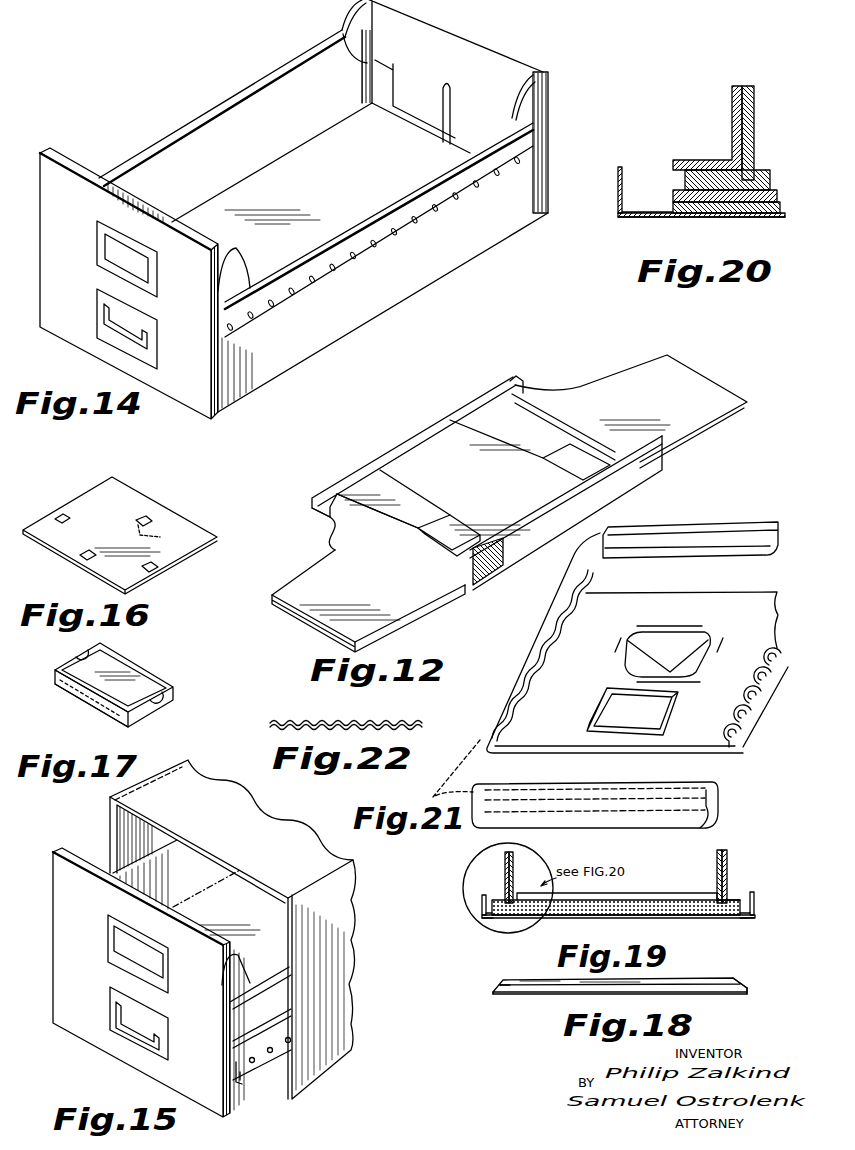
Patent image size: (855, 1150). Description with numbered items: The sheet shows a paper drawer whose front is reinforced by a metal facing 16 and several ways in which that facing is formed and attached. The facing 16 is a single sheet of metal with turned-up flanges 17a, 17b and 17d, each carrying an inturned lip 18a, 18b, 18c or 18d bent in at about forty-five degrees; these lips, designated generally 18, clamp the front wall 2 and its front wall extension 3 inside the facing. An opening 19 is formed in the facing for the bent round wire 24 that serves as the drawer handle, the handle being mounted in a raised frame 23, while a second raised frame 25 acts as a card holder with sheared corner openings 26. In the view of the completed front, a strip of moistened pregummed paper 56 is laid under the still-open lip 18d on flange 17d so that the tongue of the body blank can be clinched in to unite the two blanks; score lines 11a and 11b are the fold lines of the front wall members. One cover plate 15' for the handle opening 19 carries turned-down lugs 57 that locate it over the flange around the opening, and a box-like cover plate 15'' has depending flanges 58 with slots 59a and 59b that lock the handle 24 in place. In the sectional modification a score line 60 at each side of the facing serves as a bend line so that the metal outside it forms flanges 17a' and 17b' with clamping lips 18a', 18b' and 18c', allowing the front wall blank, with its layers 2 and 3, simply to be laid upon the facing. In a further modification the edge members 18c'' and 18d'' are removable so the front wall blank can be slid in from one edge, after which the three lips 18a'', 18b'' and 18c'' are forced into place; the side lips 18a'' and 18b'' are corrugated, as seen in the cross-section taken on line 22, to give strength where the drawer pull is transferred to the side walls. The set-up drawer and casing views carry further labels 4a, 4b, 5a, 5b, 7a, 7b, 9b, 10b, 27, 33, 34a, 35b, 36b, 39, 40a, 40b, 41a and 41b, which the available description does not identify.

In FIG. 20, the front wall 2 is at (773, 200).
In FIG. 19, the front wall 2 is at (660, 917).
In FIG. 20, the front wall extension 3 is at (762, 176).
In FIG. 12, the front wall extension 3 is at (556, 493).
In FIG. 19, the front wall extension 3 is at (685, 917).
In FIG. 14, the side flap 4a is at (236, 270).
In FIG. 20, the side flap 4a is at (735, 86).
In FIG. 12, the side flap 4a is at (320, 630).
In FIG. 19, the side flap 4a is at (505, 869).
In FIG. 15, the side flap 4a is at (245, 966).
In FIG. 19, the side flap 4b is at (728, 862).
In FIG. 20, the side wall panel 5a is at (753, 90).
In FIG. 12, the side wall panel 5a is at (368, 568).
In FIG. 19, the side wall panel 5a is at (514, 871).
In FIG. 12, the side wall panel 5b is at (631, 411).
In FIG. 19, the side wall panel 5b is at (717, 861).
In FIG. 12, the end box section 7a is at (449, 535).
In FIG. 12, the end box section 7b is at (576, 462).
In FIG. 12, the fold line 9b is at (549, 414).
In FIG. 12, the fold line 10b is at (538, 413).
In FIG. 12, the score line 11a is at (406, 484).
In FIG. 12, the score line 11b is at (492, 436).
In FIG. 16, the cover plate 15' is at (120, 535).
In FIG. 17, the box member cover plate 15'' is at (128, 685).
In FIG. 18, the metal facing 16 is at (518, 997).
In FIG. 20, the flange 17a is at (701, 230).
In FIG. 12, the flange 17a is at (301, 519).
In FIG. 18, the flange 17a is at (470, 993).
In FIG. 19, the flange 17a' is at (461, 931).
In FIG. 18, the flange 17b is at (764, 988).
In FIG. 19, the flange 17b' is at (764, 916).
In FIG. 12, the flange 17d is at (652, 474).
In FIG. 12, the corner tab 18 is at (522, 381).
In FIG. 20, the lip 18a is at (639, 178).
In FIG. 12, the lip 18a is at (319, 533).
In FIG. 18, the lip 18a is at (490, 975).
In FIG. 19, the lip 18a' is at (458, 909).
In FIG. 21, the corrugated side lip 18a'' is at (545, 655).
In FIG. 18, the lip 18b is at (757, 971).
In FIG. 19, the lip 18b' is at (772, 898).
In FIG. 22, the corrugated side lip 18b'' is at (370, 711).
In FIG. 21, the corrugated side lip 18b'' is at (756, 697).
In FIG. 12, the lip 18c is at (414, 443).
In FIG. 19, the lip 18c' is at (752, 881).
In FIG. 21, the removable edge member 18c'' is at (690, 551).
In FIG. 12, the lip 18d is at (496, 569).
In FIG. 21, the removable edge member 18d'' is at (595, 794).
In FIG. 21, the handle opening 19 is at (632, 711).
In FIG. 21, the sheet blank 22 is at (783, 636).
In FIG. 14, the raised frame 23 is at (150, 337).
In FIG. 15, the raised frame 23 is at (165, 1034).
In FIG. 14, the handle wire 24 is at (150, 356).
In FIG. 15, the handle wire 24 is at (150, 1057).
In FIG. 14, the card holder frame 25 is at (150, 289).
In FIG. 15, the card holder frame 25 is at (165, 975).
In FIG. 14, the card corner openings 26 is at (146, 258).
In FIG. 21, the card corner openings 26 is at (669, 654).
In FIG. 15, the card corner openings 26 is at (158, 950).
In FIG. 20, the base plate 27 is at (752, 219).
In FIG. 19, the base plate 27 is at (626, 919).
In FIG. 14, the drawer bottom 33 is at (347, 163).
In FIG. 15, the drawer bottom 33 is at (245, 956).
In FIG. 14, the drawer rail 34a is at (377, 265).
In FIG. 15, the drawer rail 34a is at (262, 1046).
In FIG. 14, the drawer side wall 35b is at (235, 126).
In FIG. 15, the drawer side wall 35b is at (233, 929).
In FIG. 14, the divider 36b is at (396, 76).
In FIG. 14, the back wall 39 is at (454, 51).
In FIG. 14, the corner curl 40a is at (516, 94).
In FIG. 14, the corner curl 40b is at (368, 40).
In FIG. 14, the corner post 41a is at (546, 104).
In FIG. 14, the corner post 41b is at (345, 16).
In FIG. 12, the pregummed paper strip 56 is at (540, 515).
In FIG. 16, the lugs 57 is at (65, 527).
In FIG. 17, the flanges 58 is at (125, 666).
In FIG. 17, the slot 59a is at (78, 655).
In FIG. 17, the slot 59b is at (182, 700).
In FIG. 20, the score line 60 is at (668, 212).
In FIG. 19, the score line 60 is at (497, 919).